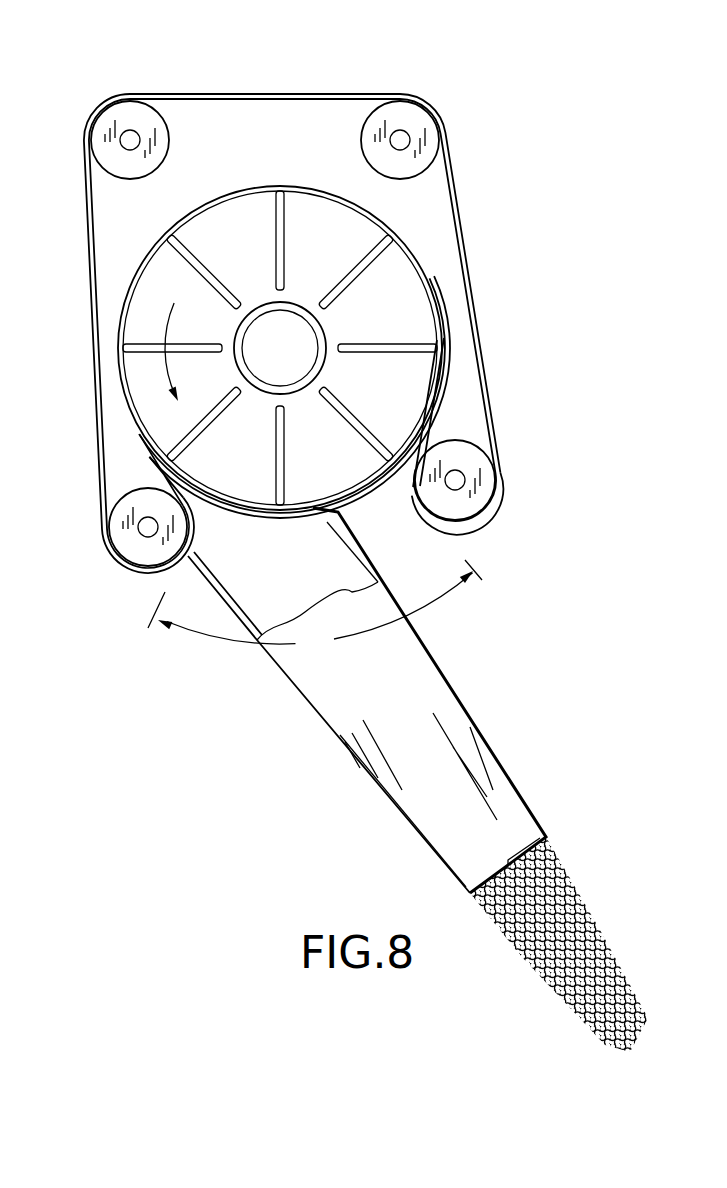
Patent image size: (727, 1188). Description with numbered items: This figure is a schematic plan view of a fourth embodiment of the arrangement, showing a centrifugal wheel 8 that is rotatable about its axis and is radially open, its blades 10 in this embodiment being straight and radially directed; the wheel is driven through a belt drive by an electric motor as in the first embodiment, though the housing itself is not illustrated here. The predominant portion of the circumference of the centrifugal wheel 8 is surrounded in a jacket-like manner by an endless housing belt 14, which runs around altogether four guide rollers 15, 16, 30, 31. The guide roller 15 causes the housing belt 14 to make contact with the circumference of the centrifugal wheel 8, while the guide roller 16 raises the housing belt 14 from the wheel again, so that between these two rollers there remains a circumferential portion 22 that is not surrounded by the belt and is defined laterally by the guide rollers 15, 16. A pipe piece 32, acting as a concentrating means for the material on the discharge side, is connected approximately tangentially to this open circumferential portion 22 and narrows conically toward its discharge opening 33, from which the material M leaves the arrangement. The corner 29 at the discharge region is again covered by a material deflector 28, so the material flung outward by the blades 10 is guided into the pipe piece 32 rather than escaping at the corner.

The centrifugal wheel 8 is at (426, 258).
The blades 10 is at (400, 348).
The housing belt 14 is at (283, 84).
The guide roller 15 is at (483, 473).
The guide roller 16 is at (122, 527).
The circumferential portion 22 is at (253, 643).
The material deflector 28 is at (364, 494).
The corner 29 is at (436, 458).
The guide roller 30 is at (421, 120).
The guide roller 31 is at (126, 112).
The pipe piece 32 is at (349, 771).
The discharge opening 33 is at (536, 843).
The material M is at (576, 902).